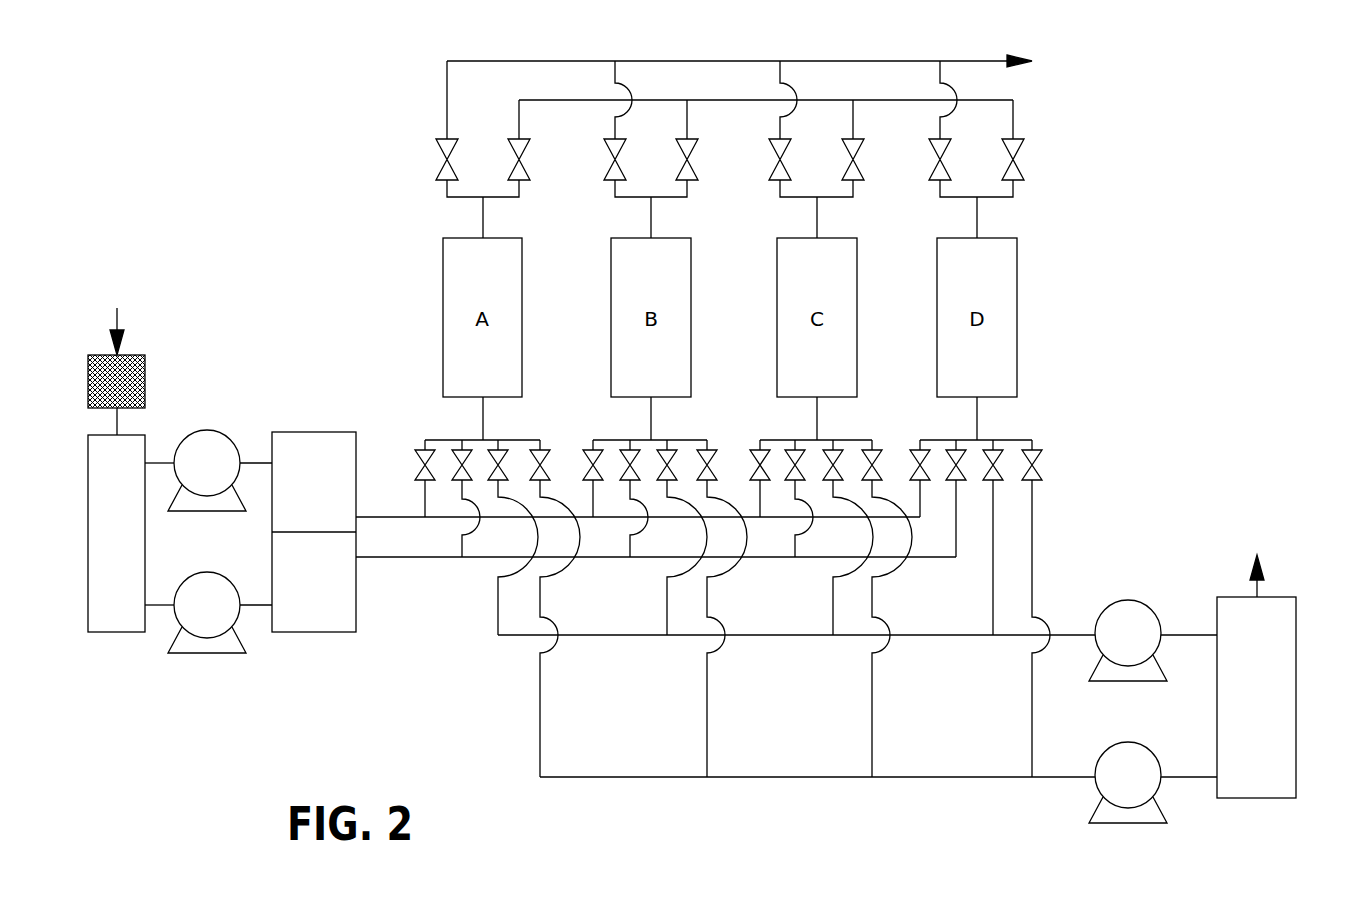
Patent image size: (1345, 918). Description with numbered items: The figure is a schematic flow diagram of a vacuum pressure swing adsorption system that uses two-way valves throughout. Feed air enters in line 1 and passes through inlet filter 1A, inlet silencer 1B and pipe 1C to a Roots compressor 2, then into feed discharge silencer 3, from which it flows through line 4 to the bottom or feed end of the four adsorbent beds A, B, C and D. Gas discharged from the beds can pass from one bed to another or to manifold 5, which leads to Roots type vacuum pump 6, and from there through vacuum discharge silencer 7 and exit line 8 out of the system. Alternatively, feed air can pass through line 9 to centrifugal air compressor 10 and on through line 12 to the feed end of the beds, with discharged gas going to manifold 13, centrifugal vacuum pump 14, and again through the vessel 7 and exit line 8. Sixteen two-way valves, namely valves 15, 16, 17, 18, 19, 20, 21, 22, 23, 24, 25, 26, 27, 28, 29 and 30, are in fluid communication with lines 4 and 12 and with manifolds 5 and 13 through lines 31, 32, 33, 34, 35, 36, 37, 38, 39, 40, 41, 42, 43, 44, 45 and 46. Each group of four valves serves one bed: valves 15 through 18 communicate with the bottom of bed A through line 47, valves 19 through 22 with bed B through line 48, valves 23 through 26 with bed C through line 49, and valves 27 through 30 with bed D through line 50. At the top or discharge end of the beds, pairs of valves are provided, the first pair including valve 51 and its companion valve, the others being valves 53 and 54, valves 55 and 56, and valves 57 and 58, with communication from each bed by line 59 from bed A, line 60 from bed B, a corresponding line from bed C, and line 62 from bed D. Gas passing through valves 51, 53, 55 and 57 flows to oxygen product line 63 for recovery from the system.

The feed air line 1 is at (118, 320).
The inlet filter 1A is at (145, 375).
The inlet silencer 1B is at (145, 549).
The pipe 1C is at (162, 458).
The Roots compressor 2 is at (217, 431).
The feed discharge silencer 3 is at (320, 431).
The line 4 is at (383, 513).
The manifold 5 is at (950, 640).
The Roots type vacuum pump 6 is at (1145, 602).
The vacuum discharge silencer 7 is at (1296, 680).
The exit line 8 is at (1262, 566).
The line 9 is at (162, 607).
The centrifugal air compressor 10 is at (213, 653).
The line 12 is at (427, 560).
The manifold 13 is at (965, 779).
The centrifugal vacuum pump 14 is at (1160, 787).
The two-way valve 15 is at (413, 452).
The two-way valve 16 is at (450, 452).
The two-way valve 17 is at (486, 452).
The two-way valve 18 is at (528, 452).
The two-way valve 19 is at (581, 452).
The two-way valve 20 is at (618, 452).
The two-way valve 21 is at (655, 452).
The two-way valve 22 is at (695, 452).
The two-way valve 23 is at (748, 452).
The two-way valve 24 is at (783, 452).
The two-way valve 25 is at (821, 452).
The two-way valve 26 is at (860, 452).
The two-way valve 27 is at (908, 452).
The two-way valve 28 is at (944, 452).
The two-way valve 29 is at (981, 452).
The two-way valve 30 is at (1020, 452).
The line 31 is at (426, 496).
The line 32 is at (463, 490).
The line 33 is at (499, 490).
The line 34 is at (541, 490).
The line 35 is at (594, 496).
The line 36 is at (631, 490).
The line 37 is at (668, 490).
The line 38 is at (708, 490).
The line 39 is at (761, 496).
The line 40 is at (796, 490).
The line 41 is at (834, 490).
The line 42 is at (873, 490).
The line 43 is at (921, 496).
The line 44 is at (957, 496).
The line 45 is at (994, 496).
The line 46 is at (1033, 496).
The line 47 is at (484, 409).
The line 48 is at (652, 409).
The line 49 is at (818, 409).
The line 50 is at (978, 409).
The valve 51 is at (445, 165).
The valve 53 is at (613, 165).
The valve 54 is at (685, 165).
The valve 55 is at (778, 165).
The valve 56 is at (851, 165).
The valve 57 is at (938, 165).
The valve 58 is at (1011, 165).
The line 59 is at (484, 226).
The line 60 is at (652, 226).
The line 62 is at (978, 226).
The oxygen product line 63 is at (830, 61).